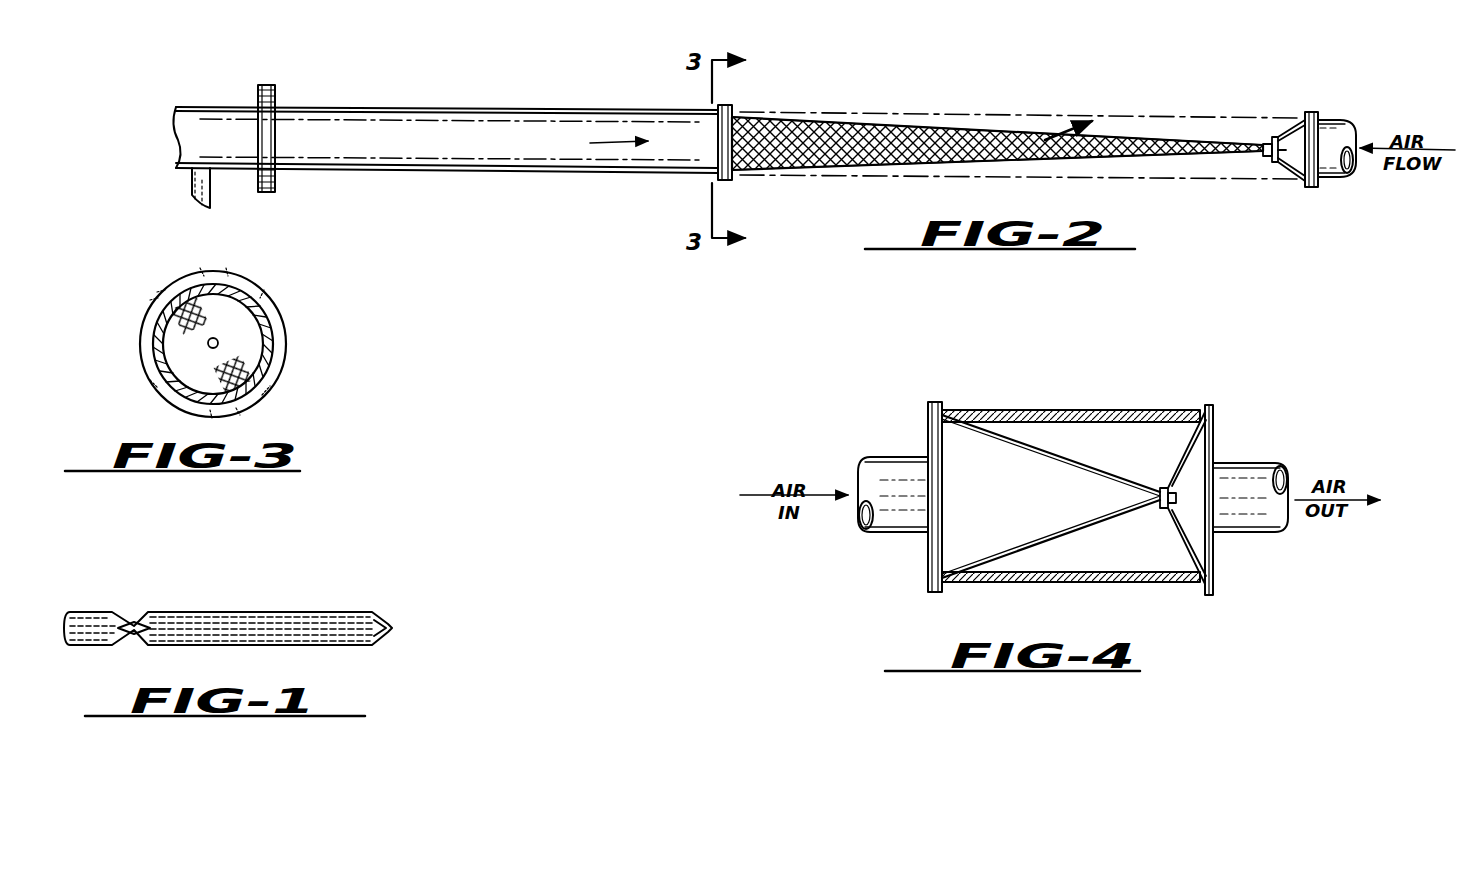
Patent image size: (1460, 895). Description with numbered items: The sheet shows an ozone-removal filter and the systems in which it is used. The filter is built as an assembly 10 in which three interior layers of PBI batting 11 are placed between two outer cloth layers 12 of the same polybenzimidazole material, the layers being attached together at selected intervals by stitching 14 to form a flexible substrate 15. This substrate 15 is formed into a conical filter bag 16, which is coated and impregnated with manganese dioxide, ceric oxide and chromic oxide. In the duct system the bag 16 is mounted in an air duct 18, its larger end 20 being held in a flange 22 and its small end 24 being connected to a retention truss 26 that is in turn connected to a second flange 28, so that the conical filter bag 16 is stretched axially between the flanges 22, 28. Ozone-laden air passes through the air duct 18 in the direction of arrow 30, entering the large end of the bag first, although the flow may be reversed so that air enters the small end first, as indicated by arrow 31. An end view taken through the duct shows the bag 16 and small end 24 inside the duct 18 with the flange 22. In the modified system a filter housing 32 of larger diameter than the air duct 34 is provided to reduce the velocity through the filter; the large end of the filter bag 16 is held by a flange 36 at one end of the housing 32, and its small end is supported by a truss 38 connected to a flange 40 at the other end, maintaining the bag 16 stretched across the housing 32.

In FIG. 1, the assembly 10 is at (272, 612).
In FIG. 1, the layers of PBI batting 11 is at (250, 612).
In FIG. 1, the outer cloth layers 12 is at (222, 612).
In FIG. 1, the stitching 14 is at (130, 612).
In FIG. 2, the substrate 15 is at (1005, 130).
In FIG. 1, the substrate 15 is at (244, 613).
In FIG. 2, the conical filter bag 16 is at (878, 116).
In FIG. 3, the conical filter bag 16 is at (240, 362).
In FIG. 4, the conical filter bag 16 is at (1078, 456).
In FIG. 2, the air duct 18 is at (449, 108).
In FIG. 3, the air duct 18 is at (265, 308).
In FIG. 2, the larger end 20 is at (740, 168).
In FIG. 3, the larger end 20 is at (172, 333).
In FIG. 2, the flange 22 is at (729, 106).
In FIG. 3, the flange 22 is at (178, 290).
In FIG. 2, the small end 24 is at (1262, 144).
In FIG. 3, the small end 24 is at (218, 342).
In FIG. 2, the retention truss 26 is at (1293, 122).
In FIG. 2, the second flange 28 is at (1318, 116).
In FIG. 2, the arrow 30 is at (612, 140).
In FIG. 2, the arrow 31 is at (1382, 152).
In FIG. 4, the filter housing 32 is at (1142, 410).
In FIG. 4, the air duct 34 is at (888, 457).
In FIG. 4, the flange 36 is at (939, 403).
In FIG. 4, the truss 38 is at (1168, 524).
In FIG. 4, the flange 40 is at (1210, 406).